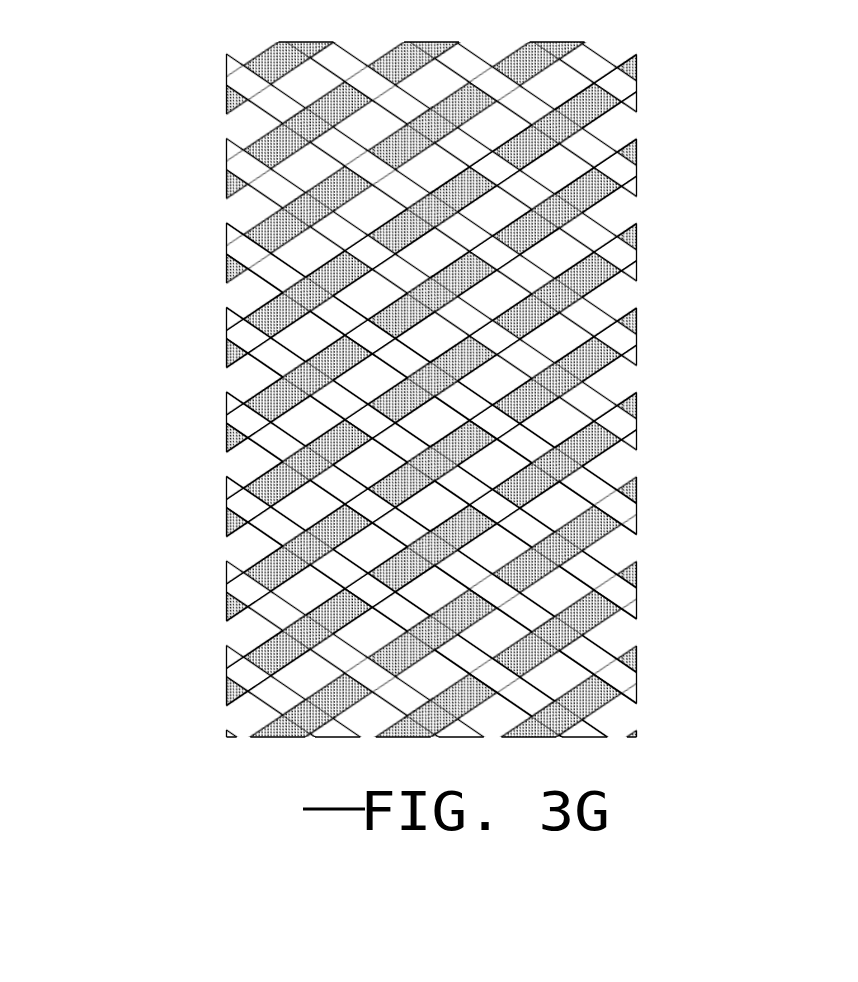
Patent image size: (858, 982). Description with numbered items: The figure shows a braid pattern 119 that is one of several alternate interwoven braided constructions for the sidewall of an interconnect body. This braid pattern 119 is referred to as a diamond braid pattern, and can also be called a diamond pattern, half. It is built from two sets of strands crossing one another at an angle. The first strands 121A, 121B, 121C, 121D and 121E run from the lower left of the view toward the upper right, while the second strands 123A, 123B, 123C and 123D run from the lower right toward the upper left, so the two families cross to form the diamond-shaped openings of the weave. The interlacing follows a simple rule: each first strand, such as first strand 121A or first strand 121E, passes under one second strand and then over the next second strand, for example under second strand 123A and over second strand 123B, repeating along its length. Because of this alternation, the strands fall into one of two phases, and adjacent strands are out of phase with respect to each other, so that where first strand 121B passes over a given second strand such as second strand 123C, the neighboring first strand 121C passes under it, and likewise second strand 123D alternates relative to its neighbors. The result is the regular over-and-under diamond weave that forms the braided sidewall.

The braid pattern 119 is at (738, 180).
The first strand 121A is at (264, 311).
The first strand 121B is at (263, 390).
The first strand 121C is at (287, 467).
The first strand 121D is at (278, 553).
The first strand 121E is at (243, 657).
The second strand 123A is at (262, 268).
The second strand 123B is at (262, 353).
The second strand 123C is at (260, 438).
The second strand 123D is at (330, 573).